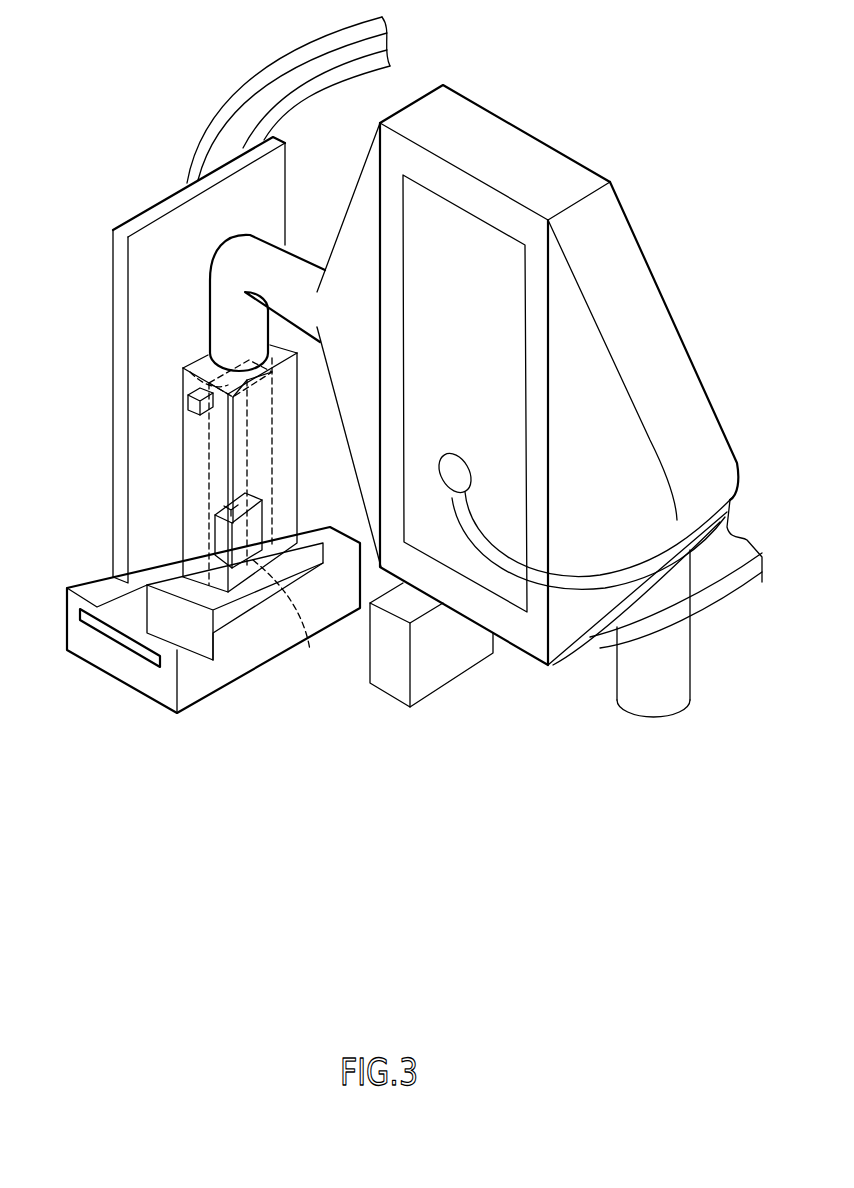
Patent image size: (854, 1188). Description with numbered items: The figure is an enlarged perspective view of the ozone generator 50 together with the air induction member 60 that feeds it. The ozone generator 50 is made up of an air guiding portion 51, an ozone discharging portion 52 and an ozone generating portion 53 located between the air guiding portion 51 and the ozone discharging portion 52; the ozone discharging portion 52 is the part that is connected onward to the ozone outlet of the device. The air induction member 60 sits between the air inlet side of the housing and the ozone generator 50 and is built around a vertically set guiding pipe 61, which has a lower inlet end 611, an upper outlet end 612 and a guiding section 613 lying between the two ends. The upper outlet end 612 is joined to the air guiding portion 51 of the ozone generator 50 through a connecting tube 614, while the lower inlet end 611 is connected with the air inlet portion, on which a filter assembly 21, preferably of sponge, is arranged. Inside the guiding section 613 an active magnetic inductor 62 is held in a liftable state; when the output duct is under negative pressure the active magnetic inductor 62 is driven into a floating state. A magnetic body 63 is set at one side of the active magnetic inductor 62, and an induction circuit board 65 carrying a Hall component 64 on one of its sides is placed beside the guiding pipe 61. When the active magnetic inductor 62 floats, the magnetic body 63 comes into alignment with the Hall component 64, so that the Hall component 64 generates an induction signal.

The filter assembly 21 is at (213, 631).
The ozone generator 50 is at (548, 373).
The air guiding portion 51 is at (189, 311).
The ozone discharging portion 52 is at (680, 650).
The ozone generating portion 53 is at (527, 147).
The air induction member 60 is at (198, 468).
The guiding pipe 61 is at (192, 467).
The active magnetic inductor 62 is at (238, 545).
The magnetic body 63 is at (233, 500).
The Hall component 64 is at (187, 407).
The induction circuit board 65 is at (148, 213).
The lower inlet end 611 is at (250, 645).
The upper outlet end 612 is at (183, 370).
The guiding section 613 is at (272, 458).
The connecting tube 614 is at (222, 298).